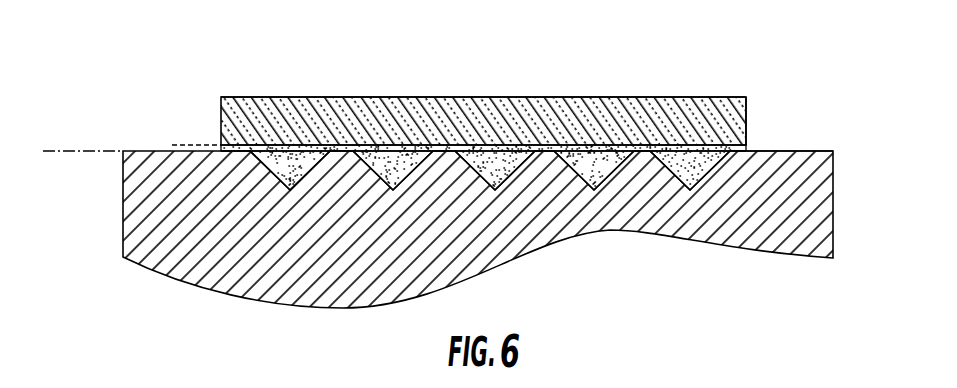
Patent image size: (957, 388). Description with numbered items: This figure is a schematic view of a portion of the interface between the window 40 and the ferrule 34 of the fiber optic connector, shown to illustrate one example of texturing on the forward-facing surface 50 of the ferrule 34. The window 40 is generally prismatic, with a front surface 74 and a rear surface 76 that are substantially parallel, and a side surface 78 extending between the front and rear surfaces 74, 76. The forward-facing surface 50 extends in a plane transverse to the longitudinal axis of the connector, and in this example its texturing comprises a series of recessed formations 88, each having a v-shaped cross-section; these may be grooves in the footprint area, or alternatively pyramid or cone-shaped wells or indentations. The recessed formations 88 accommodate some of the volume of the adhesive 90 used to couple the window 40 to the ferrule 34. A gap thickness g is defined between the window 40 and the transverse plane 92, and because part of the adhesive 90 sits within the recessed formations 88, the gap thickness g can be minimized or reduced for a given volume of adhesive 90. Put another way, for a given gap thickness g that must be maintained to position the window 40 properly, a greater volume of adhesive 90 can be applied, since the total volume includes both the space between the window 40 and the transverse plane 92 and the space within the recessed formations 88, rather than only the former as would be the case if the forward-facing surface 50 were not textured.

The ferrule 34 is at (838, 203).
The forward-facing surface 50 is at (794, 151).
The recessed formations 88 is at (606, 178).
The window 40 is at (488, 88).
The front surface 74 is at (612, 97).
The side surface 78 is at (746, 113).
The rear surface 76 is at (687, 145).
The adhesive 90 is at (292, 150).
The transverse plane 92 is at (103, 151).
The gap thickness g is at (198, 107).